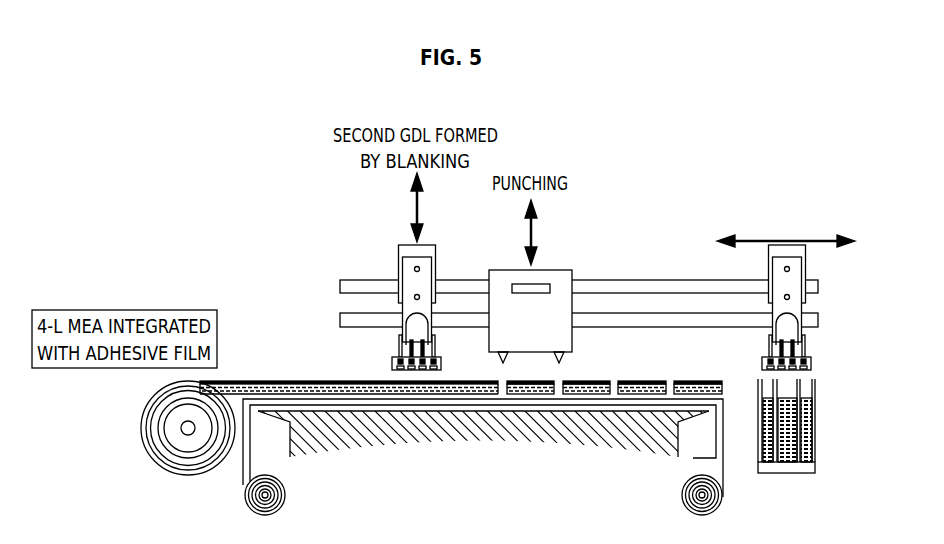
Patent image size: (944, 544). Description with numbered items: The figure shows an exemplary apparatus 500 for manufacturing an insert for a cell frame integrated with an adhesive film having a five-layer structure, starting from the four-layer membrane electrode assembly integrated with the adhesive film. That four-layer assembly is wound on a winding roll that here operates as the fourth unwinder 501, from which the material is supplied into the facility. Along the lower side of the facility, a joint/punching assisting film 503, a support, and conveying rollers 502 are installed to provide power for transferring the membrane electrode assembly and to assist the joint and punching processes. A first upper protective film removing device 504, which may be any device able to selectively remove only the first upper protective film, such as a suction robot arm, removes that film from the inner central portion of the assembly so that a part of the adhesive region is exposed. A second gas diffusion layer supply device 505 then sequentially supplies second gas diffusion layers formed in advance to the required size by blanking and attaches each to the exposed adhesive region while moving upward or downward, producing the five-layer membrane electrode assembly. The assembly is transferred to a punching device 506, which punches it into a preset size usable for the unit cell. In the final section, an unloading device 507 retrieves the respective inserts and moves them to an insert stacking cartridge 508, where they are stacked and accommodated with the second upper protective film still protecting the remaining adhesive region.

The apparatus for manufacturing an insert for a cell frame 500 is at (640, 185).
The fourth unwinder 501 is at (143, 428).
The conveying rollers 502 is at (248, 509).
The joint/punching assisting film 503 is at (716, 458).
The first upper protective film removing device 504 is at (295, 348).
The second gas diffusion layer supply device 505 is at (408, 277).
The punching device 506 is at (567, 277).
The unloading device 507 is at (796, 272).
The insert stacking cartridge 508 is at (806, 389).